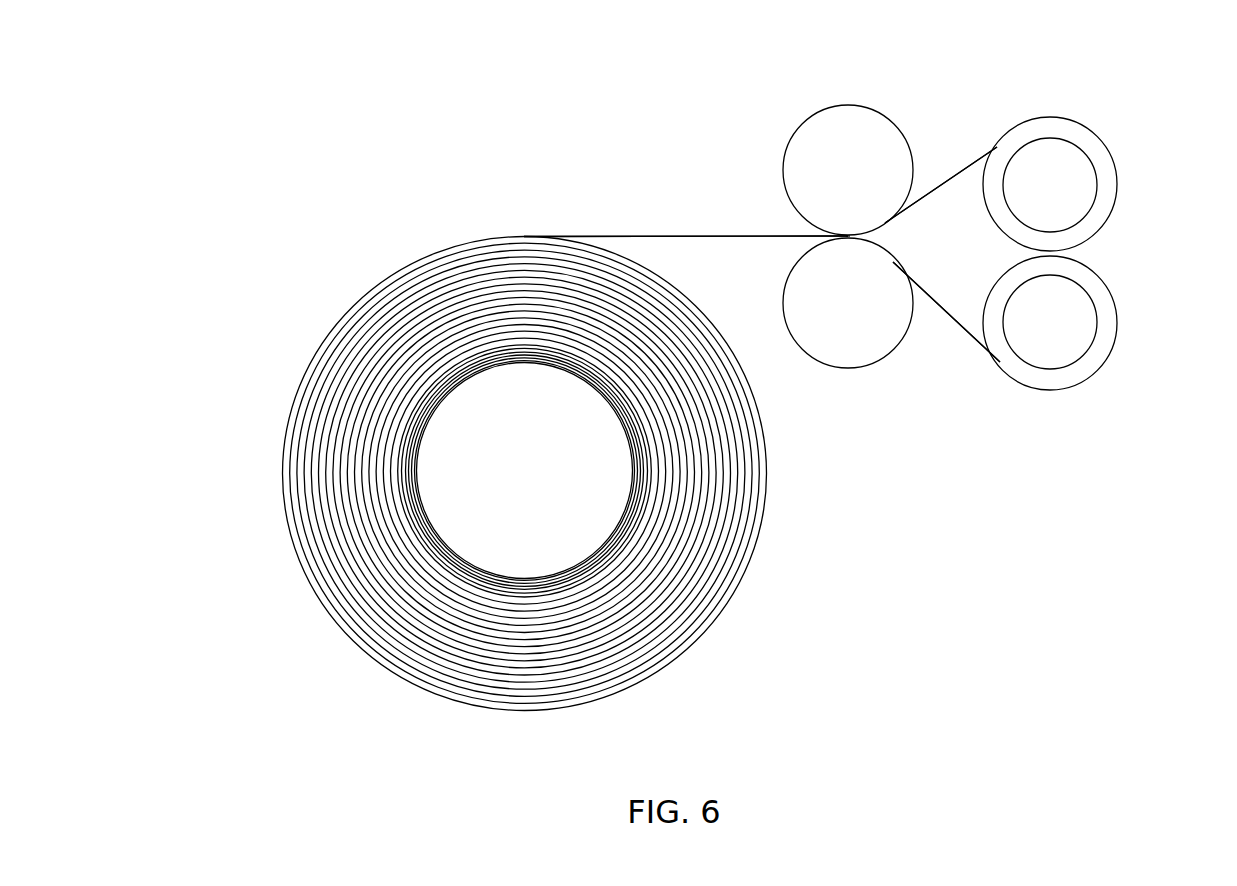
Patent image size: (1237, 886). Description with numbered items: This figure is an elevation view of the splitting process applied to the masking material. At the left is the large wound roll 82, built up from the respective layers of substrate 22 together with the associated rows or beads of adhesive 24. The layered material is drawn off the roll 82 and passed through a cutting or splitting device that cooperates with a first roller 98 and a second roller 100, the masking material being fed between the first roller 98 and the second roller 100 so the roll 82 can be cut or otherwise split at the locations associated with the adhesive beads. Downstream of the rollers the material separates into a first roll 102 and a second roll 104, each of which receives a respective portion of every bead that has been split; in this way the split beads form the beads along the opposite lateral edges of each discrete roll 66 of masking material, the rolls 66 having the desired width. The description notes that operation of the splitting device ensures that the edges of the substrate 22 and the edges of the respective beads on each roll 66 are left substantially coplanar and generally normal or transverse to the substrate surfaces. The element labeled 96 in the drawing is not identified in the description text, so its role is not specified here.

The roll 82 is at (222, 303).
The substrate 22 is at (695, 235).
The adhesive 24 is at (695, 235).
The first roller 98 is at (882, 135).
The lower roller 96 is at (837, 368).
The second roller 100 is at (848, 327).
The roll 66 is at (1103, 170).
The second roll 104 is at (1052, 158).
The first roll 102 is at (1050, 333).